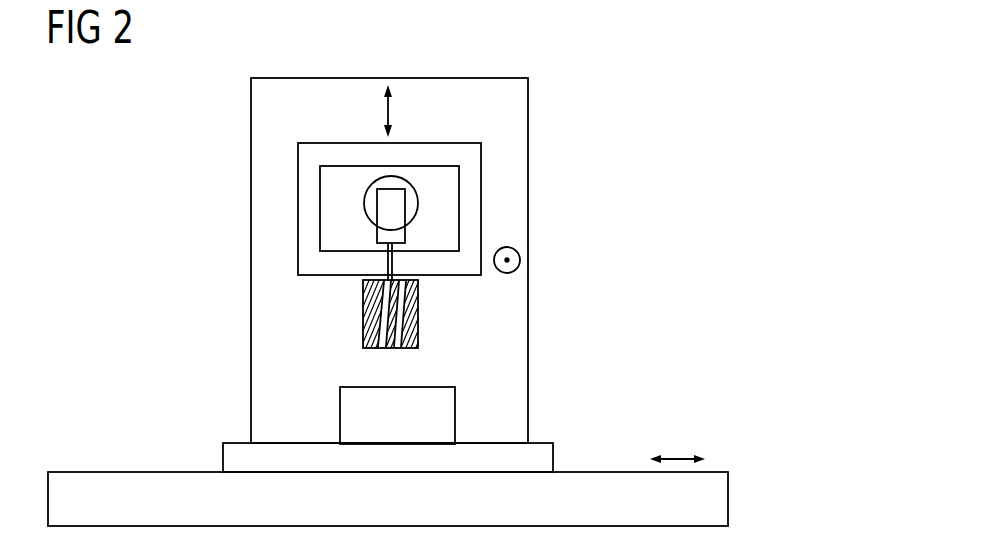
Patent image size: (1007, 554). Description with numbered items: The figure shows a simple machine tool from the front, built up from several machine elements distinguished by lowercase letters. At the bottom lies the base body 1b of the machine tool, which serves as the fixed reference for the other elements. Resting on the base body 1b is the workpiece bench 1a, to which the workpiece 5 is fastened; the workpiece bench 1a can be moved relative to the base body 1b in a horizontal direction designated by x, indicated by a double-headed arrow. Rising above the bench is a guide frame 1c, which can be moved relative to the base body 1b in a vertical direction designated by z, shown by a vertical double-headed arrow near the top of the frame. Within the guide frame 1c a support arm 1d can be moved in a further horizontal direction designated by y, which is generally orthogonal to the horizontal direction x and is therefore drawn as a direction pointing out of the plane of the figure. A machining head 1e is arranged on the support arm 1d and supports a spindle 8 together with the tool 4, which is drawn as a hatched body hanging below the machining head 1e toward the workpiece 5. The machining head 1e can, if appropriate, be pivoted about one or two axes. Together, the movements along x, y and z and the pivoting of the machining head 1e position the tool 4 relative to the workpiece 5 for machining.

The workpiece bench 1a is at (548, 455).
The base body 1b is at (720, 497).
The guide frame 1c is at (469, 217).
The support arm 1d is at (441, 186).
The machining head 1e is at (378, 202).
The tool 4 is at (363, 303).
The workpiece 5 is at (446, 410).
The spindle 8 is at (372, 212).
The horizontal direction x is at (679, 459).
The further horizontal direction y is at (520, 257).
The vertical direction z is at (388, 113).